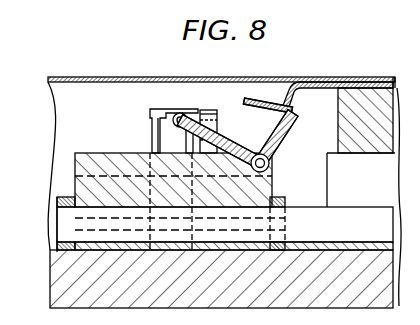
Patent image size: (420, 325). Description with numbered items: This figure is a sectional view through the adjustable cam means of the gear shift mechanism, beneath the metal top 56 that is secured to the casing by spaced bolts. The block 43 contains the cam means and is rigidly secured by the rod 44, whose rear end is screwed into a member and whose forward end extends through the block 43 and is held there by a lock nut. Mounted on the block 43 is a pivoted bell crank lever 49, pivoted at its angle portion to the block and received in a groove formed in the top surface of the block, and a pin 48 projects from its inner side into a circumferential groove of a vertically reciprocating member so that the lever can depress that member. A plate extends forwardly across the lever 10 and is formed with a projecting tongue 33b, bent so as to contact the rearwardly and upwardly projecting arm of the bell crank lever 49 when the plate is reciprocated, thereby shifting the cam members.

The metal top 56 is at (63, 76).
The pin 48 is at (173, 112).
The block 43 is at (95, 153).
The projecting tongue 33b is at (270, 100).
The bell crank lever 49 is at (283, 143).
The lever 10 is at (368, 107).
The rod 44 is at (295, 217).